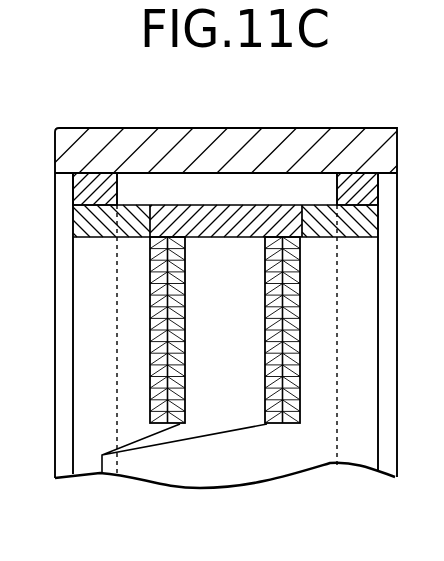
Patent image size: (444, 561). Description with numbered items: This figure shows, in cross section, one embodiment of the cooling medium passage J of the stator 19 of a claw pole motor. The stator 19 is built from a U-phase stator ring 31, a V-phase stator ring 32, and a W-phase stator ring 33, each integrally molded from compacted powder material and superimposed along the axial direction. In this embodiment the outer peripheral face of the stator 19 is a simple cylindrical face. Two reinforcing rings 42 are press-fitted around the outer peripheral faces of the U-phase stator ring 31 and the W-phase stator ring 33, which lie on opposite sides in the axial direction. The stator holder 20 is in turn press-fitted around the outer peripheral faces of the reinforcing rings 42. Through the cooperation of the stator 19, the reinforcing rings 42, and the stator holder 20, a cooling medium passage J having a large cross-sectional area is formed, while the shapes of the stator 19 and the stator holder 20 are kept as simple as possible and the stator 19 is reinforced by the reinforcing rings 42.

The stator 19 is at (386, 400).
The stator holder 20 is at (213, 142).
The cooling medium passage J is at (260, 183).
The U-phase stator ring 31 is at (381, 221).
The V-phase stator ring 32 is at (174, 200).
The W-phase stator ring 33 is at (70, 216).
The reinforcing ring 42 is at (92, 200).